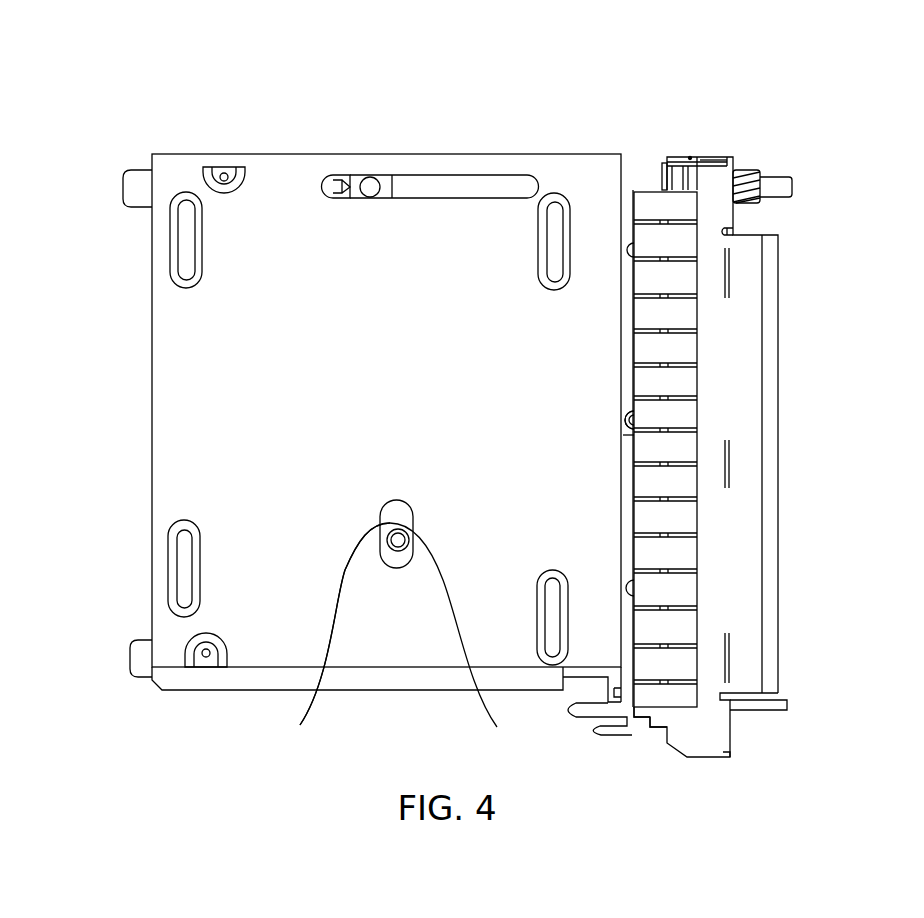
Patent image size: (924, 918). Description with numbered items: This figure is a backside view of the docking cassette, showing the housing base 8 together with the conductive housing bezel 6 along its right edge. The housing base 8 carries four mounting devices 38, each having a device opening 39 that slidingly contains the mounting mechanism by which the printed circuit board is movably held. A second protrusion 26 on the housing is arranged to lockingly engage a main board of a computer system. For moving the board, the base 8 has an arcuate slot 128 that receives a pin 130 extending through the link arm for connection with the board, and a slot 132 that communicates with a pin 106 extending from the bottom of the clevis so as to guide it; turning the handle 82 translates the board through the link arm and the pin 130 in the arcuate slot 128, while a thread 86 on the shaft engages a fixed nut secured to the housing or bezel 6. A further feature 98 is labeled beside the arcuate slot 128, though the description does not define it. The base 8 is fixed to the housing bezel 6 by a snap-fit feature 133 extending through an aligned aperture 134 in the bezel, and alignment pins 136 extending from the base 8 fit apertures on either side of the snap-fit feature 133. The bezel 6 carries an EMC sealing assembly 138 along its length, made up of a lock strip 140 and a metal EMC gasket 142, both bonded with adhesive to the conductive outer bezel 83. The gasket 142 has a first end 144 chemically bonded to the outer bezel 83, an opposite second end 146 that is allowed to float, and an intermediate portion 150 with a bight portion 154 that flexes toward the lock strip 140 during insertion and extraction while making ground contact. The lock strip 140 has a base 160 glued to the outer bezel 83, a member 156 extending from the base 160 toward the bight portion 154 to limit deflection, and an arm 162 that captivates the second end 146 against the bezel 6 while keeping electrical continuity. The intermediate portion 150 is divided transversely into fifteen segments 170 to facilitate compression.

The housing bezel 6 is at (637, 163).
The housing base 8 is at (296, 379).
The second protrusion 26 is at (597, 736).
The mounting device 38 is at (183, 183).
The device opening 39 is at (183, 248).
The handle 82 is at (780, 180).
The outer bezel 83 is at (730, 715).
The thread 86 is at (745, 172).
The spring arm 98 is at (331, 632).
The pin 106 is at (370, 180).
The arcuate slot 128 is at (416, 636).
The pin 130 is at (405, 553).
The slot 132 is at (455, 175).
The snap-fit feature 133 is at (628, 427).
The aperture 134 is at (628, 412).
The alignment pins 136 is at (628, 250).
The EMC sealing assembly 138 is at (688, 160).
The lock strip 140 is at (677, 177).
The metal EMC gasket 142 is at (657, 206).
The first end 144 is at (637, 710).
The second end 146 is at (698, 710).
The intermediate portion 150 is at (675, 280).
The bight portion 154 is at (660, 698).
The member 156 is at (667, 163).
The base 160 is at (690, 157).
The arm 162 is at (710, 165).
The segments 170 is at (690, 485).